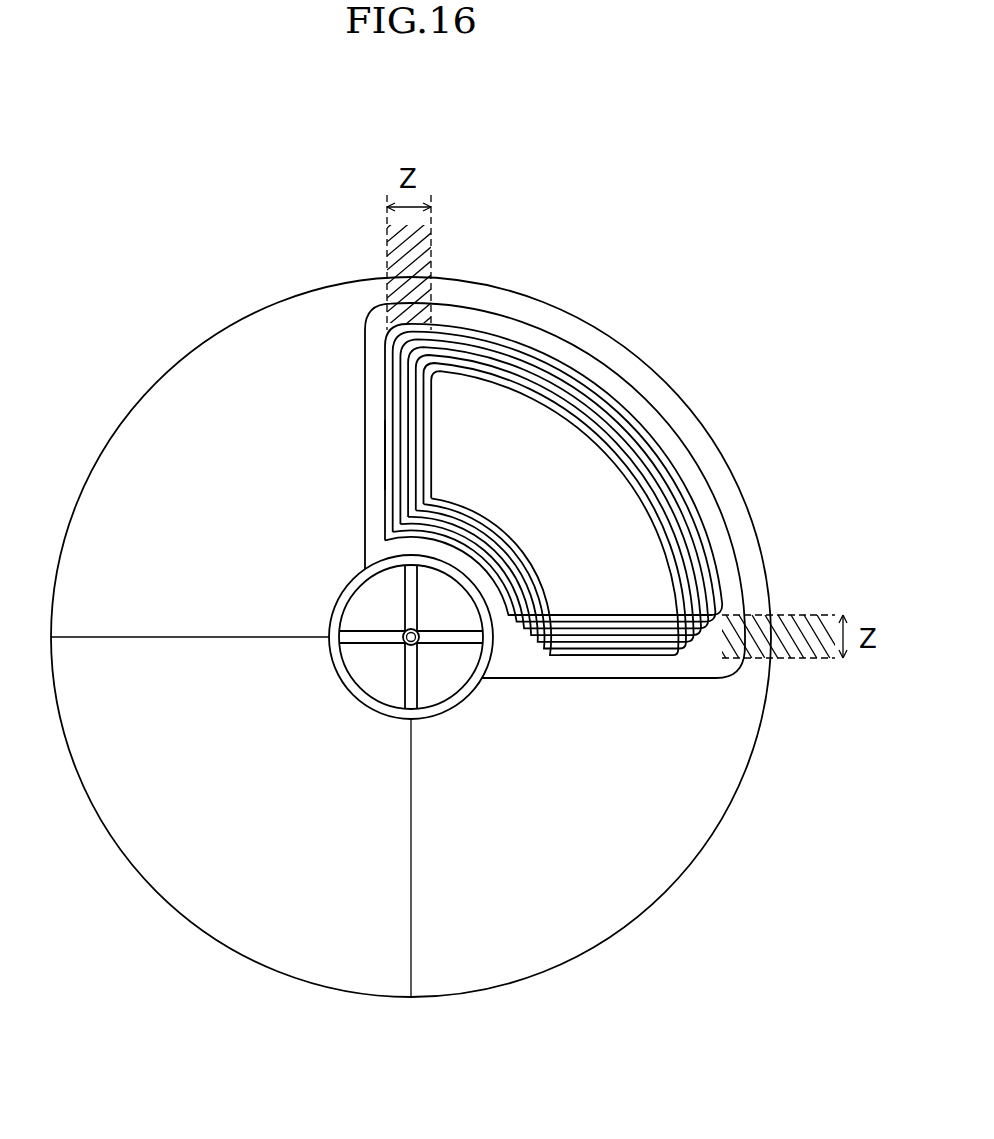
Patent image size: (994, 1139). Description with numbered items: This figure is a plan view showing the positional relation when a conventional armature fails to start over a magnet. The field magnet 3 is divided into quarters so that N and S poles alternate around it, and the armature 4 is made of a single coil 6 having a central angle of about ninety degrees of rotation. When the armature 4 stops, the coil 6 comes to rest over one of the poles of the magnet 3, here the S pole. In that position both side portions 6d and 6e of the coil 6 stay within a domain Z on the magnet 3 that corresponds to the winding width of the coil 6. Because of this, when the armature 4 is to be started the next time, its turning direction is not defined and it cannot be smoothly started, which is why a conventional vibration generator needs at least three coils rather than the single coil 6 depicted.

The field magnet 3 is at (738, 792).
The armature 4 is at (590, 368).
The coil 6 is at (505, 490).
The side portion of the coil 6d is at (392, 454).
The side portion of the coil 6e is at (595, 646).